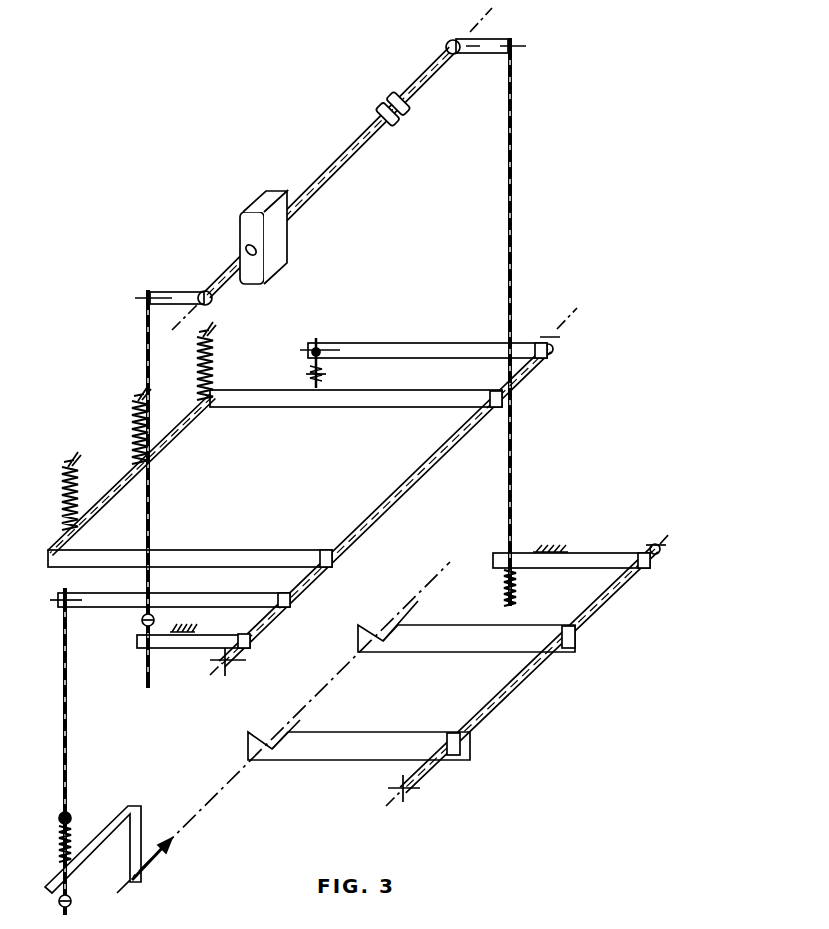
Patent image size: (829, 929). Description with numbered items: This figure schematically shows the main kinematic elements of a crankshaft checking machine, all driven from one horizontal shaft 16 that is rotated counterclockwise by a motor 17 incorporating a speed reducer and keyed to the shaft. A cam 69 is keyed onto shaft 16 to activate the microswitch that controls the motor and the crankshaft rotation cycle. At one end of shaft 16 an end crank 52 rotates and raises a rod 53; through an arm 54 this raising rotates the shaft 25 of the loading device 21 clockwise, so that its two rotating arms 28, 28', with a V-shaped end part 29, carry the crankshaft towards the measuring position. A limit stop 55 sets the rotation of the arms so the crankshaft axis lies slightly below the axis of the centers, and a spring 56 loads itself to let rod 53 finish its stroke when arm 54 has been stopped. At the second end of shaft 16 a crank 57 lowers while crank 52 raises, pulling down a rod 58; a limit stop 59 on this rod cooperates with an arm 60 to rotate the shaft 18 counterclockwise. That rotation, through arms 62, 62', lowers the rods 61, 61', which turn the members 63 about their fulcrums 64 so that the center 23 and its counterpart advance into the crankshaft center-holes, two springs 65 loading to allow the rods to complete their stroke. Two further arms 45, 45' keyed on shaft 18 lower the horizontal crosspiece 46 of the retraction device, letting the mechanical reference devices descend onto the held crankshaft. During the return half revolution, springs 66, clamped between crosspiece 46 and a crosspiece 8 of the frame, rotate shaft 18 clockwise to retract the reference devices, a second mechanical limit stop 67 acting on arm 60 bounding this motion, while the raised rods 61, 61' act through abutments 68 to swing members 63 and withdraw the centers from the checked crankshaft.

The crosspieces 8 is at (62, 466).
The horizontal shaft 16 is at (321, 173).
The motor 17 is at (266, 201).
The shaft 18 is at (402, 483).
The loading device 21 is at (519, 696).
The center 23 is at (157, 862).
The shaft 25 is at (610, 600).
The rotating arm 28 is at (466, 661).
The rotating arm 28' is at (359, 764).
The V-shaped end part 29 is at (360, 624).
The arm 45 is at (356, 412).
The arm 45' is at (190, 540).
The horizontal crosspiece 46 is at (181, 440).
The end crank 52 is at (478, 42).
The rod 53 is at (514, 129).
The arm 54 is at (600, 552).
The limit stop 55 is at (543, 545).
The spring 56 is at (519, 585).
The crank 57 is at (179, 295).
The rod 58 is at (147, 358).
The limit stop 59 is at (141, 628).
The arm 60 is at (182, 649).
The rod 61 is at (334, 363).
The rod 61' is at (86, 751).
The arm 62 is at (423, 336).
The arm 62' is at (170, 617).
The member 63 is at (155, 818).
The fulcrum 64 is at (98, 812).
The spring 65 is at (58, 843).
The spring 66 is at (60, 498).
The second mechanical limit stop 67 is at (190, 628).
The abutment 68 is at (72, 902).
The cam 69 is at (393, 97).